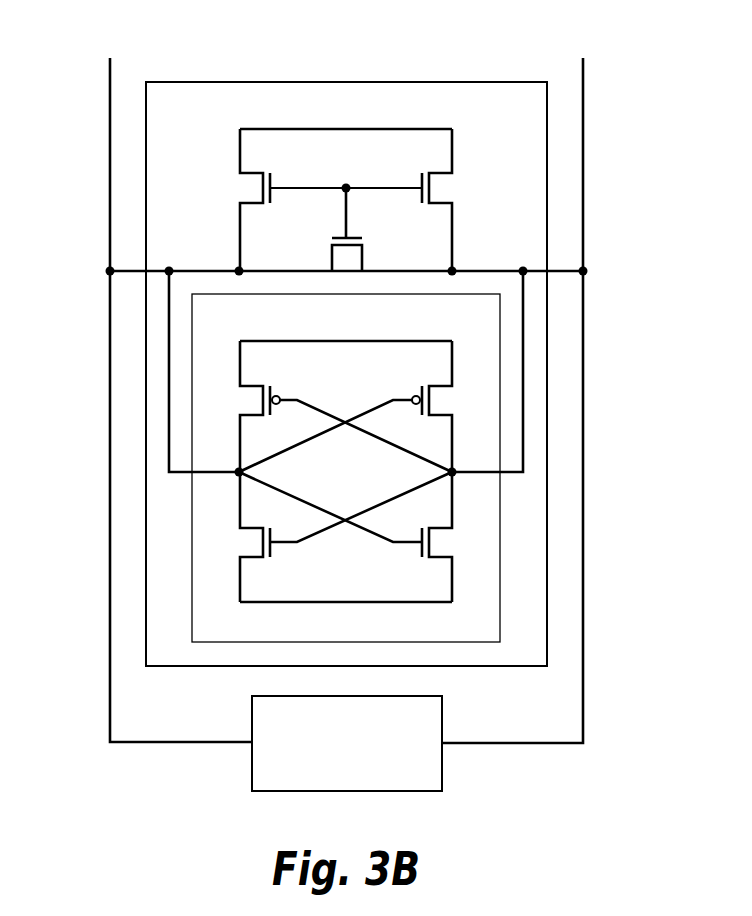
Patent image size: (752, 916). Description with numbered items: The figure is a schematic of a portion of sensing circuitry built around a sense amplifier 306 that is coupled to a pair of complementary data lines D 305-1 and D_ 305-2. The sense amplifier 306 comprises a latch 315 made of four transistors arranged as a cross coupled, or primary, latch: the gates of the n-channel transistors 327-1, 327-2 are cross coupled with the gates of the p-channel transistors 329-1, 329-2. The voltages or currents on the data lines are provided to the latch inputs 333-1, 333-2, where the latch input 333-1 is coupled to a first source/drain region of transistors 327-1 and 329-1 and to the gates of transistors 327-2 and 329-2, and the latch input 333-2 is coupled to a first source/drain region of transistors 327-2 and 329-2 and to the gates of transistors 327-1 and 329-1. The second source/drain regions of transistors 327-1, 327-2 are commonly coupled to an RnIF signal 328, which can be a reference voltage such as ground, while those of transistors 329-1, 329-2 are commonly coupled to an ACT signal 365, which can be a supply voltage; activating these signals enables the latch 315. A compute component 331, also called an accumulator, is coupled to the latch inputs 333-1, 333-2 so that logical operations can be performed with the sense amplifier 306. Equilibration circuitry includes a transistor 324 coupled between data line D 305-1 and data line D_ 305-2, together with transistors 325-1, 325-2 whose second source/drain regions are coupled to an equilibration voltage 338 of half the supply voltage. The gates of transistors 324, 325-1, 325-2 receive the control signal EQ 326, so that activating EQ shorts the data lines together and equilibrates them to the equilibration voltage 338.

The data line D 305-1 is at (110, 125).
The data line D_ 305-2 is at (583, 125).
The sense amplifier 306 is at (243, 82).
The latch 315 is at (192, 558).
The equilibration voltage 338 is at (416, 129).
The transistor 325-1 is at (247, 188).
The transistor 325-2 is at (447, 188).
The control signal EQ 326 is at (313, 190).
The transistor 324 is at (356, 260).
The ACT signal 365 is at (303, 341).
The p-channel transistor 329-1 is at (253, 394).
The p-channel transistor 329-2 is at (440, 395).
The latch input 333-1 is at (239, 472).
The latch input 333-2 is at (452, 472).
The n-channel transistor 327-1 is at (252, 548).
The n-channel transistor 327-2 is at (440, 548).
The RnIF signal 328 is at (392, 602).
The compute component 331 is at (262, 766).